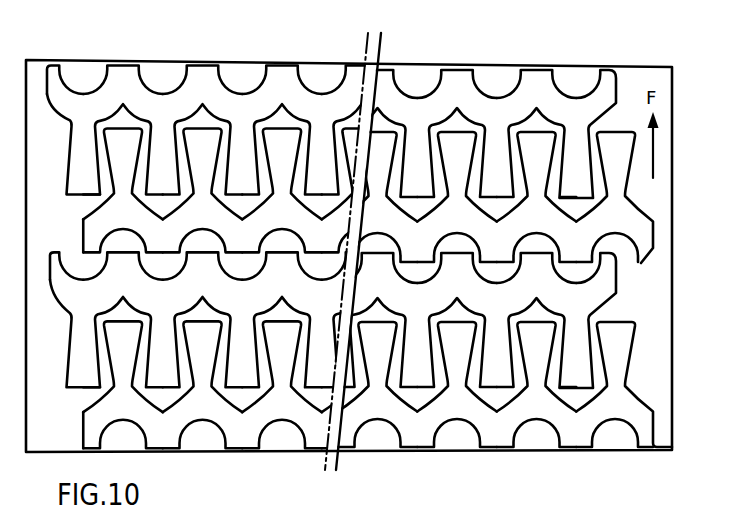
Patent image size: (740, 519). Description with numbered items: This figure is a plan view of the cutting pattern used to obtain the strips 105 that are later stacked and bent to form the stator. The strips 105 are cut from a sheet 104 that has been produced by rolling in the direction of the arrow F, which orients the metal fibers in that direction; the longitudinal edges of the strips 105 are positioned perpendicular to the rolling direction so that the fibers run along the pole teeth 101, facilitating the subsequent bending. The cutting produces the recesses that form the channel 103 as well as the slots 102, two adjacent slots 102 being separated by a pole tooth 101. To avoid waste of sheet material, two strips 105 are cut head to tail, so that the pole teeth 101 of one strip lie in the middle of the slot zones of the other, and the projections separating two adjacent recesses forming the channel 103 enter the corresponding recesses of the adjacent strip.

The pole tooth 101 is at (73, 183).
The slot 102 is at (120, 120).
The channel 103 is at (76, 82).
The sheet 104 is at (620, 83).
The strip 105 is at (103, 97).